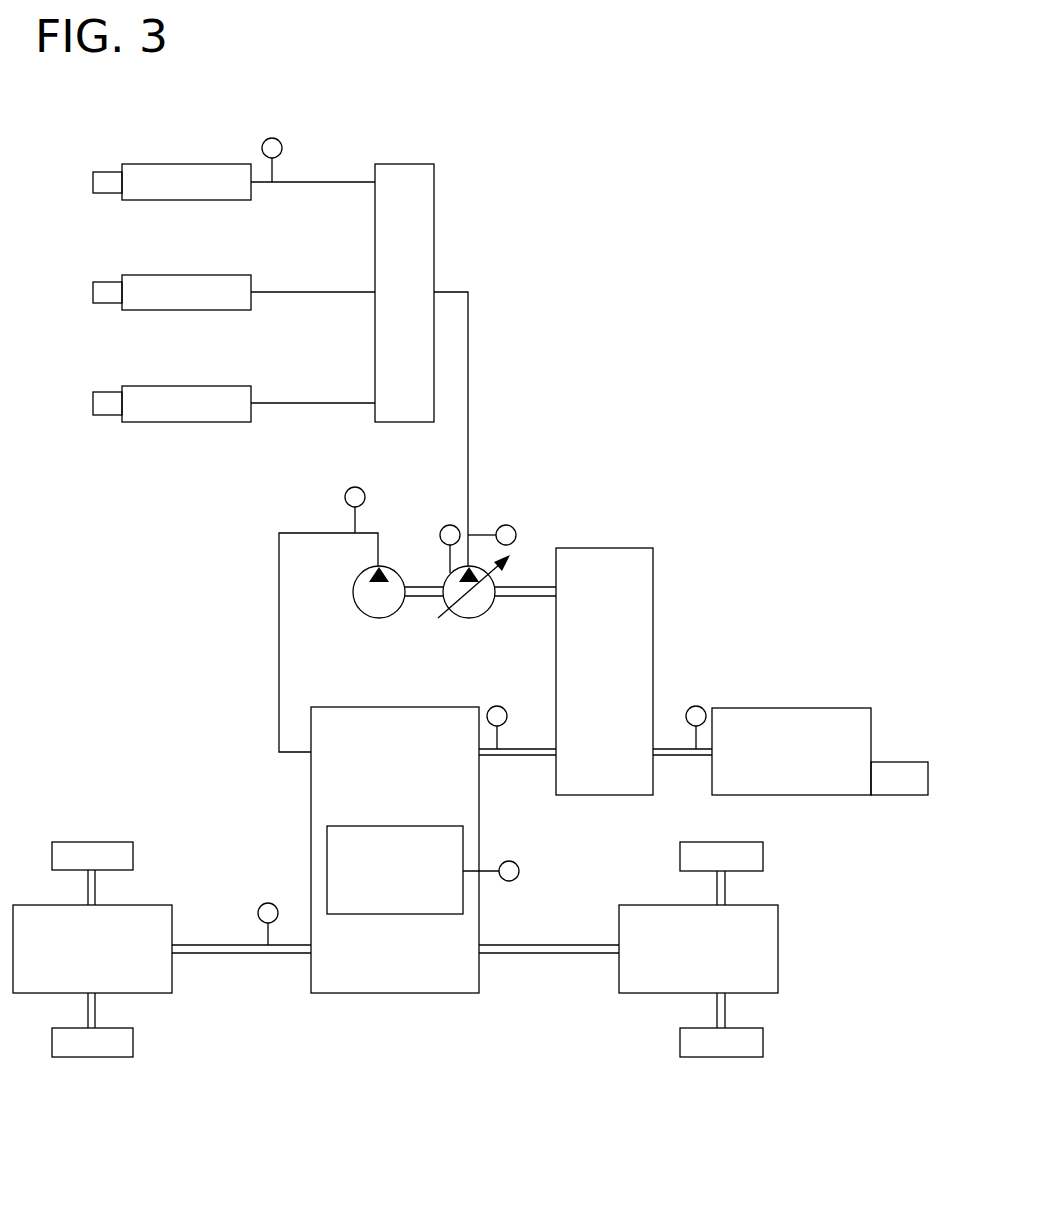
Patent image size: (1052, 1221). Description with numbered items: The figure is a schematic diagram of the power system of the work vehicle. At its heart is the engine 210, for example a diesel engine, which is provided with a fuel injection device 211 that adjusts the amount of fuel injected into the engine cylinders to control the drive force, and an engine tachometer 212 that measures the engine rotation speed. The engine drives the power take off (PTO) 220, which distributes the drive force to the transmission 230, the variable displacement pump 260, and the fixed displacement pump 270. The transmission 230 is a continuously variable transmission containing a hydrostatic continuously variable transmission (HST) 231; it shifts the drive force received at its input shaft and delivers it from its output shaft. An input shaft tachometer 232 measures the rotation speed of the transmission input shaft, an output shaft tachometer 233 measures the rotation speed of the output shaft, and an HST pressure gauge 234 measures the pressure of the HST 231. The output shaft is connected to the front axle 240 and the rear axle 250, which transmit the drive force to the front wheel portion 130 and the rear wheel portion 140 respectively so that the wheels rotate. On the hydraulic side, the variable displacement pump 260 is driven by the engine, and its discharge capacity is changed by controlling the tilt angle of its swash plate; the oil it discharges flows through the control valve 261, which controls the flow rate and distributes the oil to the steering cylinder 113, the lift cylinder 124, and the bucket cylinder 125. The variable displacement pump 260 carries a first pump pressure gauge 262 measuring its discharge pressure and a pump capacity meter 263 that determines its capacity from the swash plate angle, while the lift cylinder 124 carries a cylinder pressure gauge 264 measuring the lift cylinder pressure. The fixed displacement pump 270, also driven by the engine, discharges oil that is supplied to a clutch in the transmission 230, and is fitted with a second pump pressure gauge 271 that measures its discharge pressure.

The steering cylinder 113 is at (203, 386).
The lift cylinder 124 is at (203, 164).
The bucket cylinder 125 is at (203, 275).
The front wheel portion 130 is at (133, 853).
The rear wheel portion 140 is at (763, 853).
The engine 210 is at (813, 708).
The fuel injection device 211 is at (893, 762).
The engine tachometer 212 is at (697, 706).
The power take off (PTO) 220 is at (605, 548).
The transmission 230 is at (402, 993).
The hydrostatic continuously variable transmission (HST) 231 is at (423, 826).
The input shaft tachometer 232 is at (503, 706).
The output shaft tachometer 233 is at (268, 903).
The HST pressure gauge 234 is at (510, 860).
The front axle 240 is at (160, 993).
The rear axle 250 is at (632, 993).
The variable displacement pump 260 is at (468, 618).
The control valve 261 is at (393, 164).
The first pump pressure gauge 262 is at (507, 525).
The pump capacity meter 263 is at (452, 525).
The cylinder pressure gauge 264 is at (274, 138).
The fixed displacement pump 270 is at (380, 618).
The second pump pressure gauge 271 is at (357, 487).